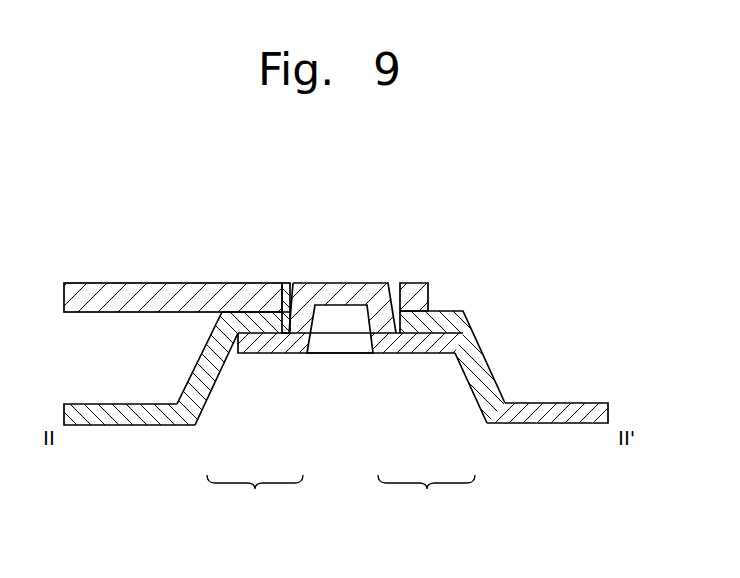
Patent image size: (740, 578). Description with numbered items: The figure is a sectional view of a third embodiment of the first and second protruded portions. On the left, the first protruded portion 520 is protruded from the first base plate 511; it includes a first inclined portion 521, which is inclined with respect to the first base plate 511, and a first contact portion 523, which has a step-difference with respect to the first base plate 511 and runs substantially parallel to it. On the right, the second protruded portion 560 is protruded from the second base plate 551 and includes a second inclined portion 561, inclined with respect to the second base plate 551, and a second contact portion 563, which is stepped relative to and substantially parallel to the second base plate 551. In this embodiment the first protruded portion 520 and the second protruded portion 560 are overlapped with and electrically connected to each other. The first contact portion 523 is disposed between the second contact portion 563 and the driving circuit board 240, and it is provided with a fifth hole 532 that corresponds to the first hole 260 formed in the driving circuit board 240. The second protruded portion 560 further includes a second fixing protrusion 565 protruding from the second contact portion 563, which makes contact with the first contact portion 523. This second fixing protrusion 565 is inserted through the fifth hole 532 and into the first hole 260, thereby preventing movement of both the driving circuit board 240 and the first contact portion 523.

The driving circuit board 240 is at (178, 288).
The first hole 260 is at (287, 288).
The second fixing protrusion 565 is at (337, 288).
The fifth hole 532 is at (405, 288).
The first base plate 511 is at (137, 426).
The first inclined portion 521 is at (207, 385).
The first contact portion 523 is at (257, 323).
The first protruded portion 520 is at (255, 497).
The second contact portion 563 is at (417, 347).
The second inclined portion 561 is at (475, 382).
The second protruded portion 560 is at (426, 497).
The second base plate 551 is at (553, 424).